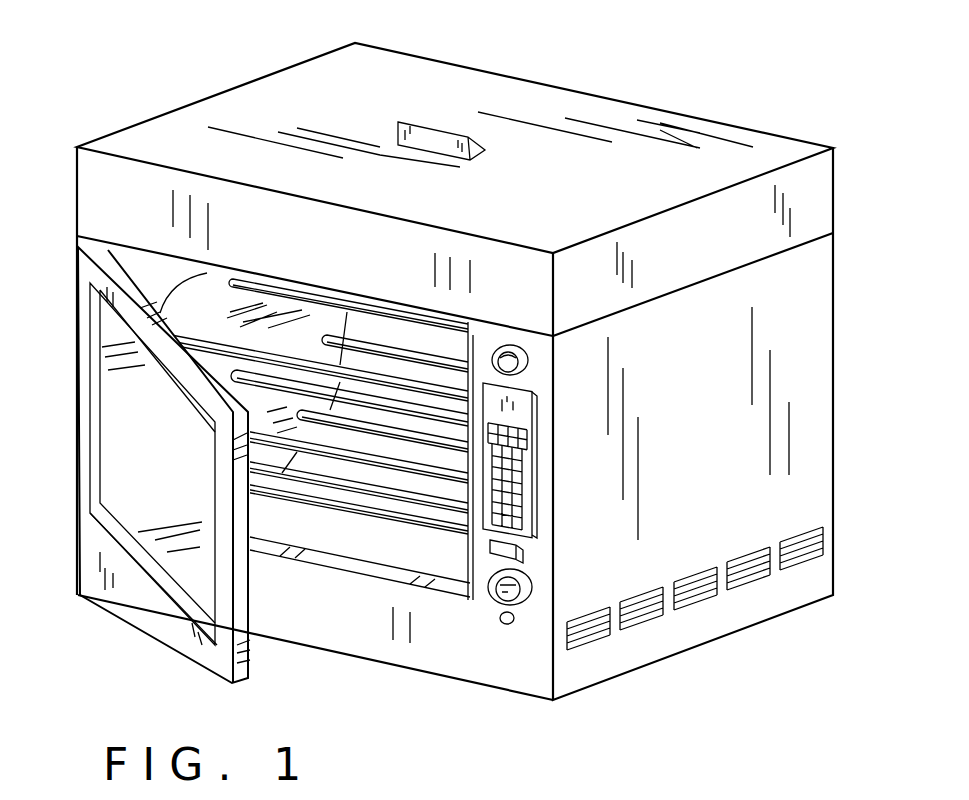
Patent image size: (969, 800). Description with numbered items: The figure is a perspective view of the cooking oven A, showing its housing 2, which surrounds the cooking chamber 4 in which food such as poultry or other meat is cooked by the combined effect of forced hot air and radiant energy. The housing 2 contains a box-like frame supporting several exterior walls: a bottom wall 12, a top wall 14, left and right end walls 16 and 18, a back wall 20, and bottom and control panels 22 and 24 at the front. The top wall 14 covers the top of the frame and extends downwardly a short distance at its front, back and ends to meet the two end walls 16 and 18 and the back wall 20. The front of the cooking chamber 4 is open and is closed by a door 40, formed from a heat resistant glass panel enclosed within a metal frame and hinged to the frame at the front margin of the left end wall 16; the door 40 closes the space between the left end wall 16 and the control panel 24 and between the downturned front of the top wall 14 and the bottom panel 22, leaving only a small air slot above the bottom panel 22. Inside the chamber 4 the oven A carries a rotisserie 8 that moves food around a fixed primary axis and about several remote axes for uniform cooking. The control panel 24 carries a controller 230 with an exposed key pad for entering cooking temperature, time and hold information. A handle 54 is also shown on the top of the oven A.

The oven A is at (752, 108).
The housing 2 is at (501, 15).
The cooking chamber 4 is at (446, 558).
The rotisserie 8 is at (404, 480).
The bottom wall 12 is at (676, 195).
The top wall 14 is at (277, 95).
The left end wall 16 is at (78, 347).
The right end wall 18 is at (810, 415).
The back wall 20 is at (833, 275).
The bottom panel 22 is at (347, 623).
The control panel 24 is at (535, 663).
The door 40 is at (213, 652).
The handle 54 is at (378, 123).
The controller 230 is at (515, 400).